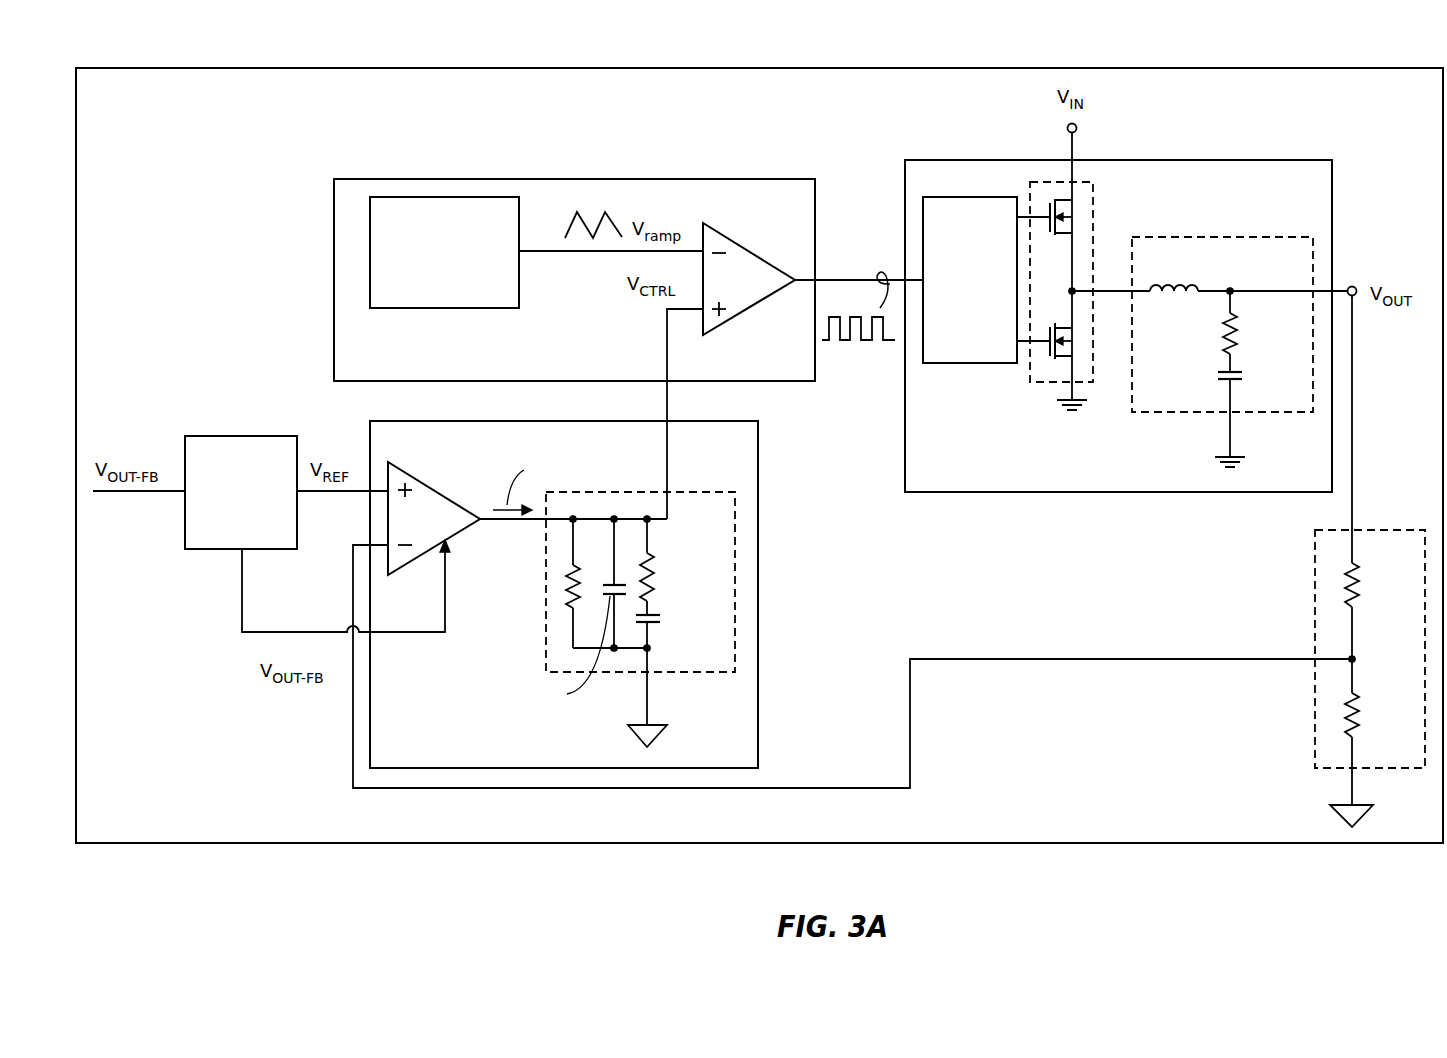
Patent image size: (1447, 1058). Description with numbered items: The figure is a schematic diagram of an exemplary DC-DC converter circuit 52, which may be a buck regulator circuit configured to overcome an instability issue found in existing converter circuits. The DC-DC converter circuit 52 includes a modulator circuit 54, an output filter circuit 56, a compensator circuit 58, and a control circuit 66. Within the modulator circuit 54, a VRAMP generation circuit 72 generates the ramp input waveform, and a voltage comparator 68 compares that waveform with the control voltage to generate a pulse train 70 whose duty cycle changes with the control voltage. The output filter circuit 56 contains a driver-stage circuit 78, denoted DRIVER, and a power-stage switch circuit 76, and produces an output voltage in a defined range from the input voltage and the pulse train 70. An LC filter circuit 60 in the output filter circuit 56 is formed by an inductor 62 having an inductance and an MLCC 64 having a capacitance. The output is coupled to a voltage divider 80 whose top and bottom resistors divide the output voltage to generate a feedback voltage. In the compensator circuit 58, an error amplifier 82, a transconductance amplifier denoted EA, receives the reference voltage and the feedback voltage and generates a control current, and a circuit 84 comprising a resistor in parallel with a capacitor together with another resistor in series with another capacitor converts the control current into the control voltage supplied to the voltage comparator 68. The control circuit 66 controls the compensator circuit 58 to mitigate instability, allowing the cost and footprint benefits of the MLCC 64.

The DC-DC converter circuit 52 is at (127, 150).
The modulator circuit 54 is at (374, 373).
The output filter circuit 56 is at (949, 478).
The compensator circuit 58 is at (410, 760).
The LC filter circuit 60 is at (1209, 324).
The inductor 62 is at (1178, 293).
The MLCC 64 is at (1224, 371).
The control circuit 66 is at (230, 524).
The voltage comparator 68 is at (750, 252).
The pulse train 70 is at (858, 344).
The VRAMP generation circuit 72 is at (433, 297).
The power-stage switch circuit 76 is at (1042, 383).
The driver-stage circuit 78 is at (959, 306).
The voltage divider 80 is at (1370, 530).
The error amplifier 82 is at (433, 482).
The circuit 84 is at (693, 492).